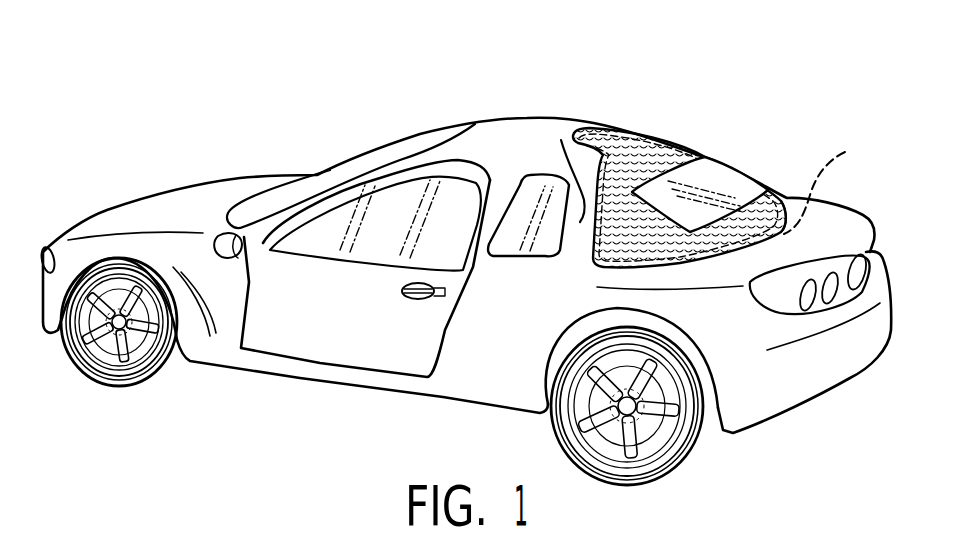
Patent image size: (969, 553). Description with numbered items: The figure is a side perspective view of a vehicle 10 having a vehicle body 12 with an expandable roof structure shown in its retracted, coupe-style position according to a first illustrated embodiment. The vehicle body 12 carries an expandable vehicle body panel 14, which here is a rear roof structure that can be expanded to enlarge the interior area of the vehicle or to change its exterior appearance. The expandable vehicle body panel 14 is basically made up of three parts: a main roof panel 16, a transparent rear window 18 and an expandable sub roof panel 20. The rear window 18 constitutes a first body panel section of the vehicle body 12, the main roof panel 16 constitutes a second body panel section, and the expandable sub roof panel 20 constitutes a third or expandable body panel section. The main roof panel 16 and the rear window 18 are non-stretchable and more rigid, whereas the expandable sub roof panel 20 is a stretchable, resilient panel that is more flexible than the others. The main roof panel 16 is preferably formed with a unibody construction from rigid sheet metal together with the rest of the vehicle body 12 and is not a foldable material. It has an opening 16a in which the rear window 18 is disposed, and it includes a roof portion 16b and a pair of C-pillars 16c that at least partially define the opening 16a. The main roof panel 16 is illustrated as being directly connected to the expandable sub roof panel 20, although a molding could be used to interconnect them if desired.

The vehicle 10 is at (602, 98).
The vehicle body 12 is at (494, 379).
The expandable vehicle body panel 14 is at (837, 106).
The main roof panel 16 is at (629, 119).
The opening 16a is at (829, 184).
The roof portion 16b is at (527, 131).
The C-pillars 16c is at (561, 140).
The transparent rear window 18 is at (717, 163).
The expandable sub roof panel 20 is at (777, 187).